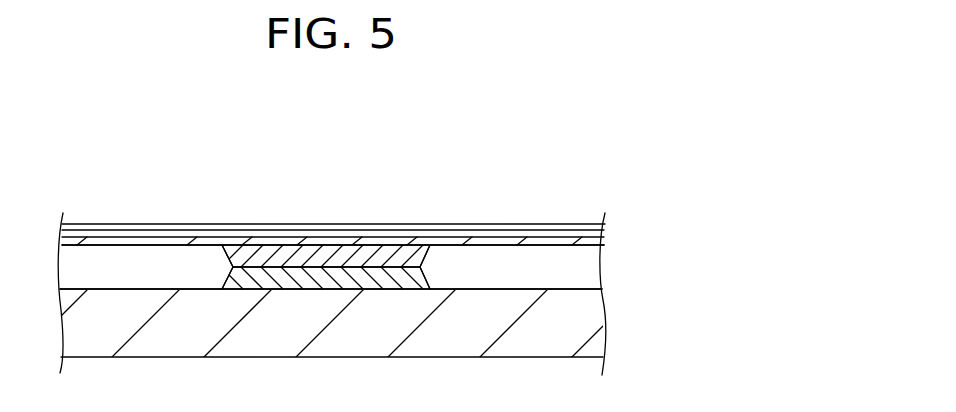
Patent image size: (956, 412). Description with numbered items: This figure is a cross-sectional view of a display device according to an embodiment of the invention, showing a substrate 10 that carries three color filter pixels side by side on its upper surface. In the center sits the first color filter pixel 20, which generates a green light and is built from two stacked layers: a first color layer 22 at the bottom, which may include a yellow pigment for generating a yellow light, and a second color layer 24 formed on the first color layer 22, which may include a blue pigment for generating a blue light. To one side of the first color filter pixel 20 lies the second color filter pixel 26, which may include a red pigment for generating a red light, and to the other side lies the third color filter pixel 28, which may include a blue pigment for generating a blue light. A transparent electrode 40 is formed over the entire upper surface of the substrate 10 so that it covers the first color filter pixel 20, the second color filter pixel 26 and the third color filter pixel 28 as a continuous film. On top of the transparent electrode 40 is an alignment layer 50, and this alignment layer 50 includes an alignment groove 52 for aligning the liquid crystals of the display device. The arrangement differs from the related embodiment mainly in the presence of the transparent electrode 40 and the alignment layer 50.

The substrate 10 is at (590, 318).
The first color filter pixel 20 is at (322, 210).
The first color layer 22 is at (338, 277).
The second color layer 24 is at (287, 258).
The second color filter pixel 26 is at (138, 258).
The third color filter pixel 28 is at (481, 260).
The transparent electrode 40 is at (592, 240).
The alignment layer 50 is at (371, 216).
The alignment groove 52 is at (556, 227).